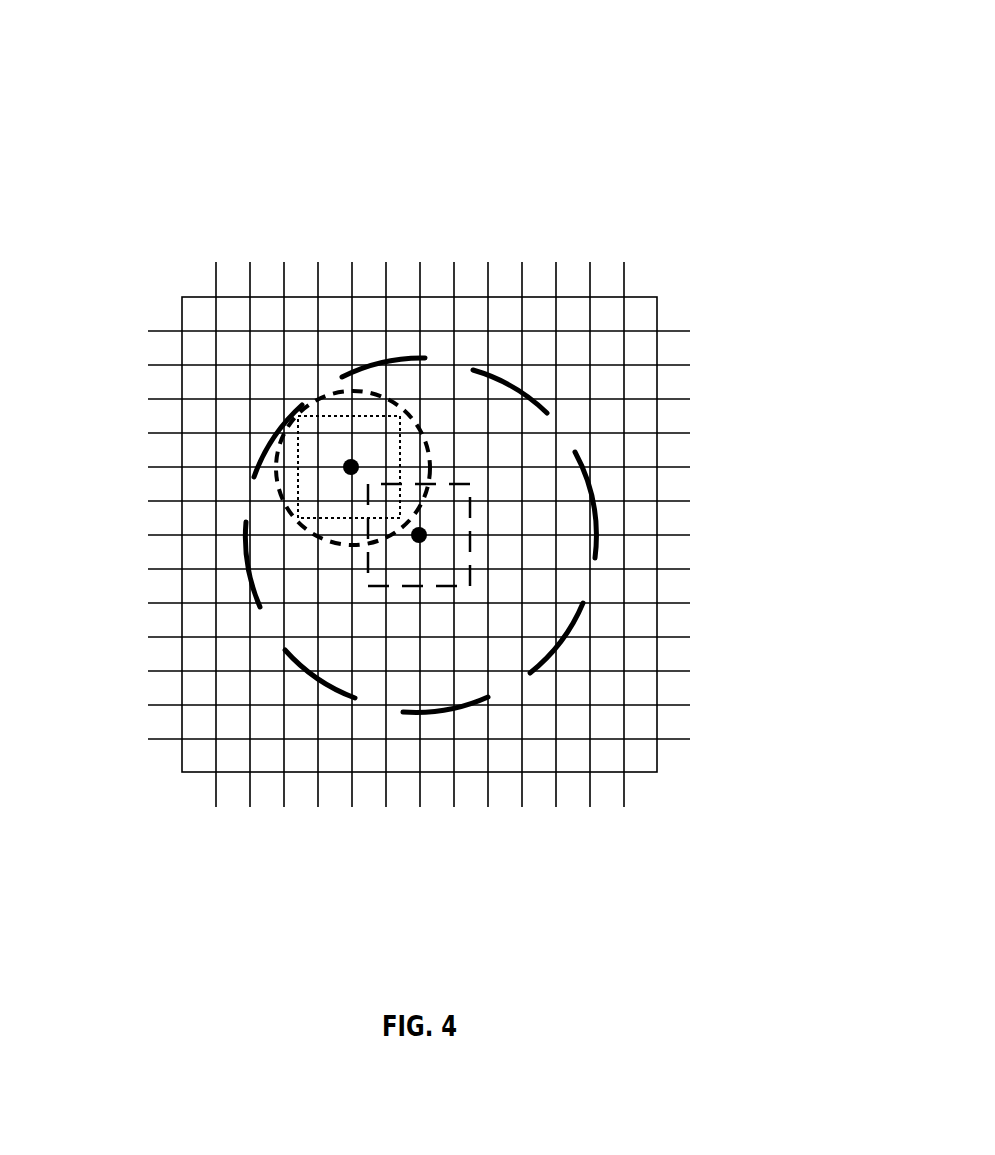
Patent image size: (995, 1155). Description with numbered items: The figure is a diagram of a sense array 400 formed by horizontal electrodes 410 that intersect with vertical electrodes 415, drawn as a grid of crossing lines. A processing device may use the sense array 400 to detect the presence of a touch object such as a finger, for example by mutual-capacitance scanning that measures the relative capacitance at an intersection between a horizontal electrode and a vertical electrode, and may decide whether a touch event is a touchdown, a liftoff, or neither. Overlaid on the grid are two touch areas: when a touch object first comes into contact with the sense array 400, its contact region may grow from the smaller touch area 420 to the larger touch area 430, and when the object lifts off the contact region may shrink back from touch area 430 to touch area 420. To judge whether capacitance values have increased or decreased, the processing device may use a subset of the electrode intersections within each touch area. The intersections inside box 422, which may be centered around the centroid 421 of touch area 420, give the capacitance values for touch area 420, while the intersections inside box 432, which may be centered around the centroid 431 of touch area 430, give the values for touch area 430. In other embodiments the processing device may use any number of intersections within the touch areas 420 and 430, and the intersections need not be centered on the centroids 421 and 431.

The sense array 400 is at (197, 100).
The horizontal electrodes 410 is at (710, 807).
The vertical electrodes 415 is at (691, 825).
The touch area 420 is at (332, 394).
The centroid 421 is at (351, 467).
The box 422 is at (300, 488).
The touch area 430 is at (505, 370).
The centroid 431 is at (419, 536).
The box 432 is at (383, 587).